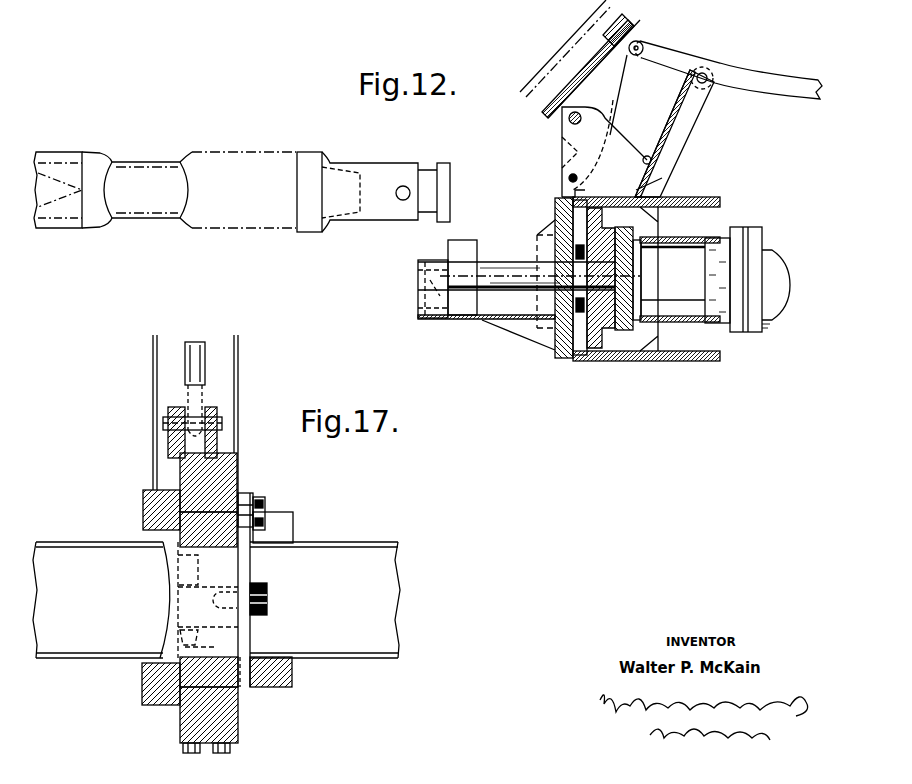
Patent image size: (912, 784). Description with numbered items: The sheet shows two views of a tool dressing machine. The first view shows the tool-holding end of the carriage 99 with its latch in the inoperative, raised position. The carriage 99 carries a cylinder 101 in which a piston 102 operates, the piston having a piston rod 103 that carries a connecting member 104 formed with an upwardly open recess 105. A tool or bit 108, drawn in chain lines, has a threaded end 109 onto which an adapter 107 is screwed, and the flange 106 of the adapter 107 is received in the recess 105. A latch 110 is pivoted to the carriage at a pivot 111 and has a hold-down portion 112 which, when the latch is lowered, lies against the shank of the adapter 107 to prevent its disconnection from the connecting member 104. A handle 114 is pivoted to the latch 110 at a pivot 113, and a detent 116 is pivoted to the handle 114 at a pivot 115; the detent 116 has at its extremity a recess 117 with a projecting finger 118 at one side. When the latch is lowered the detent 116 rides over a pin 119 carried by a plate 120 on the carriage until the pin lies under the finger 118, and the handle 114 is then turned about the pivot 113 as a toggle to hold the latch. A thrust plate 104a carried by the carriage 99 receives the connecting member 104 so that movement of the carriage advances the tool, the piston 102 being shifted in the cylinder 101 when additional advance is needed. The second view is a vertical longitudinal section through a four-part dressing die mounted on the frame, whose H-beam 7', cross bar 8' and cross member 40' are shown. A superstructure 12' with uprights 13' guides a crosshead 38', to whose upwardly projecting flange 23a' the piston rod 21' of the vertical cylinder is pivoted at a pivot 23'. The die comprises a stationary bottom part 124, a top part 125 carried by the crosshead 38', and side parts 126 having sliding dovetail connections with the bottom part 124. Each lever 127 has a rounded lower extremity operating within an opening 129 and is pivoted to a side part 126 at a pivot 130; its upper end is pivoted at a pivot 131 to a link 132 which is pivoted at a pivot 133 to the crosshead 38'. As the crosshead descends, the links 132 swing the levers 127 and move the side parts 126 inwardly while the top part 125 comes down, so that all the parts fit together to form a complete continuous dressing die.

In FIG. 12, the carriage 99 is at (620, 362).
In FIG. 12, the cylinder 101 is at (676, 240).
In FIG. 12, the piston 102 is at (655, 290).
In FIG. 12, the piston rod 103 is at (493, 272).
In FIG. 12, the connecting member 104 is at (462, 250).
In FIG. 12, the thrust plate 104a is at (562, 352).
In FIG. 12, the recess 105 is at (436, 284).
In FIG. 12, the flange 106 is at (443, 187).
In FIG. 12, the adapter 107 is at (387, 177).
In FIG. 12, the tool or bit 108 is at (58, 153).
In FIG. 12, the threaded end 109 is at (332, 162).
In FIG. 12, the latch 110 is at (606, 90).
In FIG. 12, the pivot 111 is at (570, 180).
In FIG. 12, the hold-down portion 112 is at (632, 25).
In FIG. 12, the pivot 113 is at (642, 48).
In FIG. 12, the handle 114 is at (765, 90).
In FIG. 12, the pivot 115 is at (704, 73).
In FIG. 12, the detent 116 is at (677, 126).
In FIG. 12, the recess 117 is at (655, 162).
In FIG. 12, the finger 118 is at (655, 186).
In FIG. 12, the pin 119 is at (570, 122).
In FIG. 12, the plate 120 is at (620, 145).
In FIG. 17, the superstructure 12' is at (175, 414).
In FIG. 17, the upright 13' is at (173, 412).
In FIG. 17, the piston rod 21' is at (231, 389).
In FIG. 17, the flange 23a' is at (236, 405).
In FIG. 17, the pivot 23' is at (223, 428).
In FIG. 17, the crosshead 38' is at (227, 499).
In FIG. 17, the top die part 125 is at (143, 507).
In FIG. 17, the link 132 is at (240, 495).
In FIG. 17, the pivot 131 is at (265, 511).
In FIG. 17, the pivot 133 is at (270, 528).
In FIG. 17, the lever 127 is at (250, 562).
In FIG. 17, the side die part 126 is at (182, 598).
In FIG. 17, the pivot 130 is at (268, 598).
In FIG. 17, the H-beam 7' is at (216, 611).
In FIG. 17, the stationary bottom die part 124 is at (142, 690).
In FIG. 17, the cross member 40' is at (261, 672).
In FIG. 17, the opening 129 is at (258, 680).
In FIG. 17, the cross bar 8' is at (190, 720).